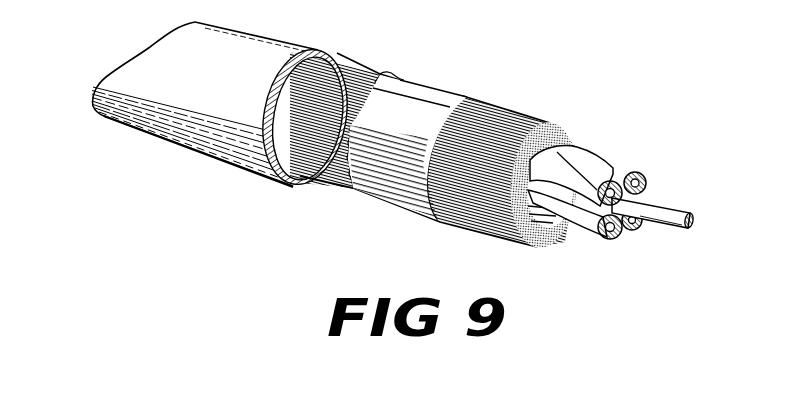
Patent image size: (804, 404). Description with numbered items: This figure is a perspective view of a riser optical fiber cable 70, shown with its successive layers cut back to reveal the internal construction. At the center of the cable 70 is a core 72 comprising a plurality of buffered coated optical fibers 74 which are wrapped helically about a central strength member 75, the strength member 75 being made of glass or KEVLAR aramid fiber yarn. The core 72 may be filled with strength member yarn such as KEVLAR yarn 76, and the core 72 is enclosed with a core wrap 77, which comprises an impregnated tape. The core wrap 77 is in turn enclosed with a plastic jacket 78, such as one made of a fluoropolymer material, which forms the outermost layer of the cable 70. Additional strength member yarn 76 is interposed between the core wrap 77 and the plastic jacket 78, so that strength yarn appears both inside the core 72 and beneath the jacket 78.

The cable 70 is at (401, 135).
The core 72 is at (582, 132).
The buffered coated optical fibers 74 is at (619, 178).
The central strength member 75 is at (664, 210).
The KEVLAR yarn 76 is at (358, 73).
The core wrap 77 is at (392, 193).
The plastic jacket 78 is at (254, 40).